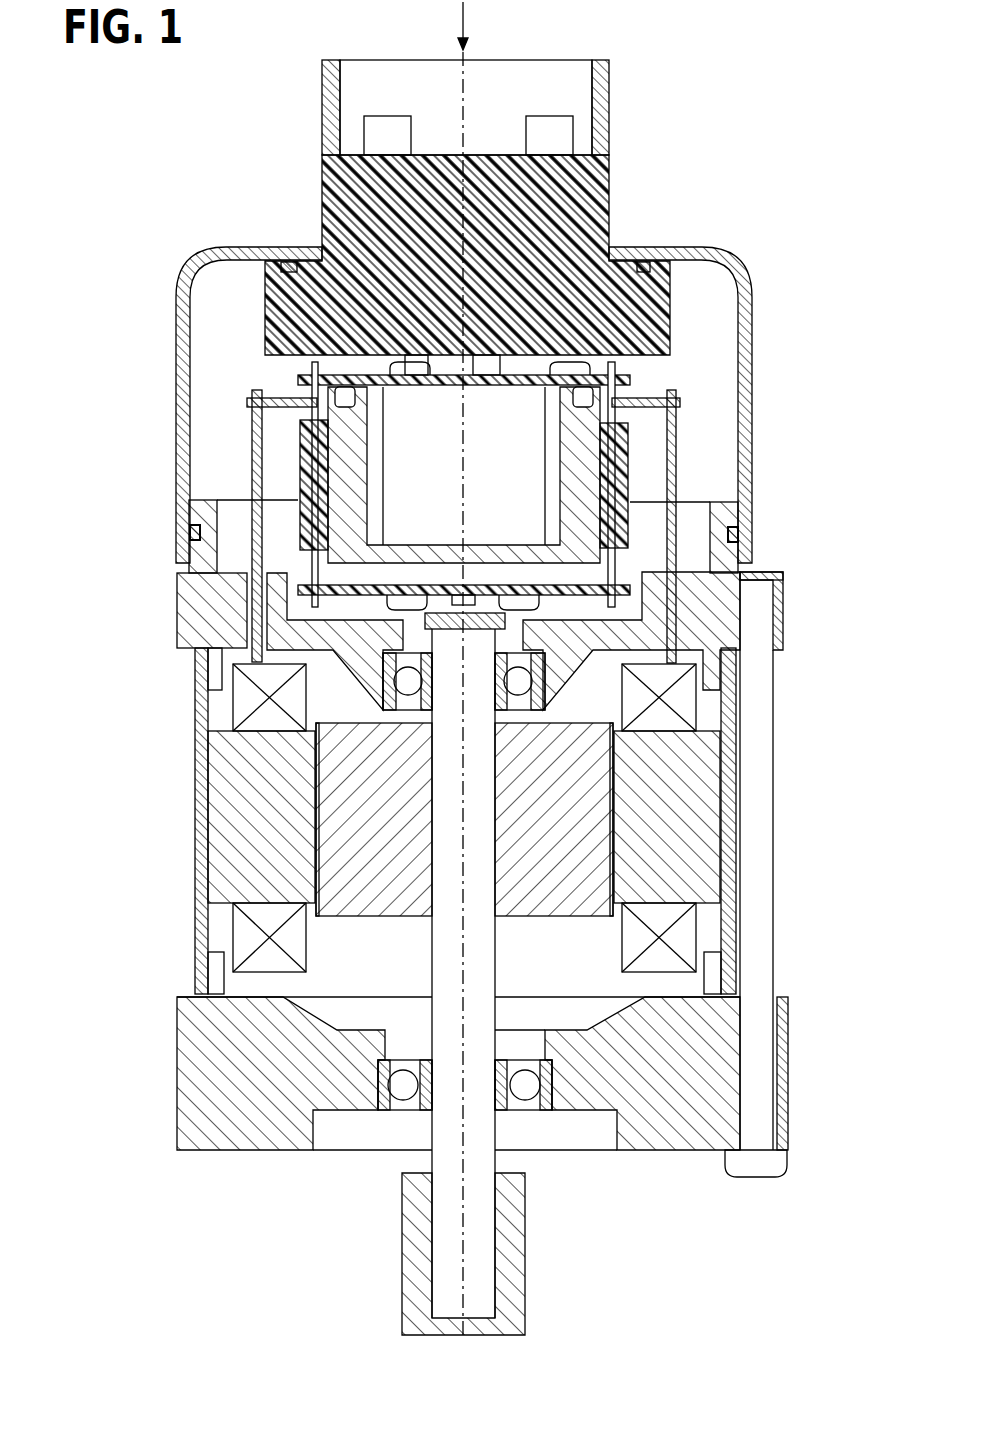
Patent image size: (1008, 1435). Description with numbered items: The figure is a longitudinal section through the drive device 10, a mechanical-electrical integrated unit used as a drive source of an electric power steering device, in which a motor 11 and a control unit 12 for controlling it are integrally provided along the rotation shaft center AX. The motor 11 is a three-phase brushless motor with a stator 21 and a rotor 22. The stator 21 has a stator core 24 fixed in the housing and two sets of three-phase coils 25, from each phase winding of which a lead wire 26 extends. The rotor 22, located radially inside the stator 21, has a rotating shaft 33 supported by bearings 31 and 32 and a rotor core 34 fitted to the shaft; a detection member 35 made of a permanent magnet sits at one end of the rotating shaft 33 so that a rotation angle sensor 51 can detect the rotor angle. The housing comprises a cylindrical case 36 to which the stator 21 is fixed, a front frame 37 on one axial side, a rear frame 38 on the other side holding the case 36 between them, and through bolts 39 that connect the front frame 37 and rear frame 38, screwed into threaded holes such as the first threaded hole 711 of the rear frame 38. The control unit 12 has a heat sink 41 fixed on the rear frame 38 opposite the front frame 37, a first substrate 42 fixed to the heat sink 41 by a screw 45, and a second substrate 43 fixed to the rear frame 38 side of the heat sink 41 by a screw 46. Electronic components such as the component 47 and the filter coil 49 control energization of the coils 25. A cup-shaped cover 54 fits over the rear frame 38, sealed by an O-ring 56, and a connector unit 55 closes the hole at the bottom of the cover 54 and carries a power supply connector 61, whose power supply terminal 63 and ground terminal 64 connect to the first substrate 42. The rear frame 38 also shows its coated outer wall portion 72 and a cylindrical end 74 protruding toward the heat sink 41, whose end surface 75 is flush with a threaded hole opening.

The drive device 10 is at (176, 176).
The motor 11 is at (190, 880).
The control unit 12 is at (205, 252).
The stator 21 is at (196, 818).
The rotor 22 is at (596, 819).
The stator core 24 is at (235, 777).
The coil 25 is at (240, 705).
The lead wire 26 is at (300, 427).
The bearing 31 is at (525, 1085).
The bearing 32 is at (518, 681).
The rotating shaft 33 is at (485, 788).
The rotor core 34 is at (585, 823).
The detection member 35 is at (505, 630).
The case 36 is at (200, 835).
The front frame 37 is at (190, 1072).
The rear frame 38 is at (183, 610).
The through bolt 39 is at (755, 880).
The heat sink 41 is at (340, 463).
The first substrate 42 is at (297, 380).
The second substrate 43 is at (307, 585).
The screw 45 is at (349, 322).
The screw 46 is at (383, 605).
The electronic component 47 is at (252, 428).
The coil 49 is at (525, 498).
The rotation angle sensor 51 is at (600, 612).
The cover 54 is at (183, 328).
The connector unit 55 is at (647, 302).
The O-ring 56 is at (190, 533).
The power supply connector 61 is at (329, 120).
The power supply terminal 63 is at (442, 361).
The ground terminal 64 is at (494, 363).
The outer wall portion 72 is at (785, 598).
The cylindrical end 74 is at (200, 517).
The end surface 75 is at (203, 500).
The first threaded hole 711 is at (778, 597).
The rotation shaft center AX is at (460, 1245).